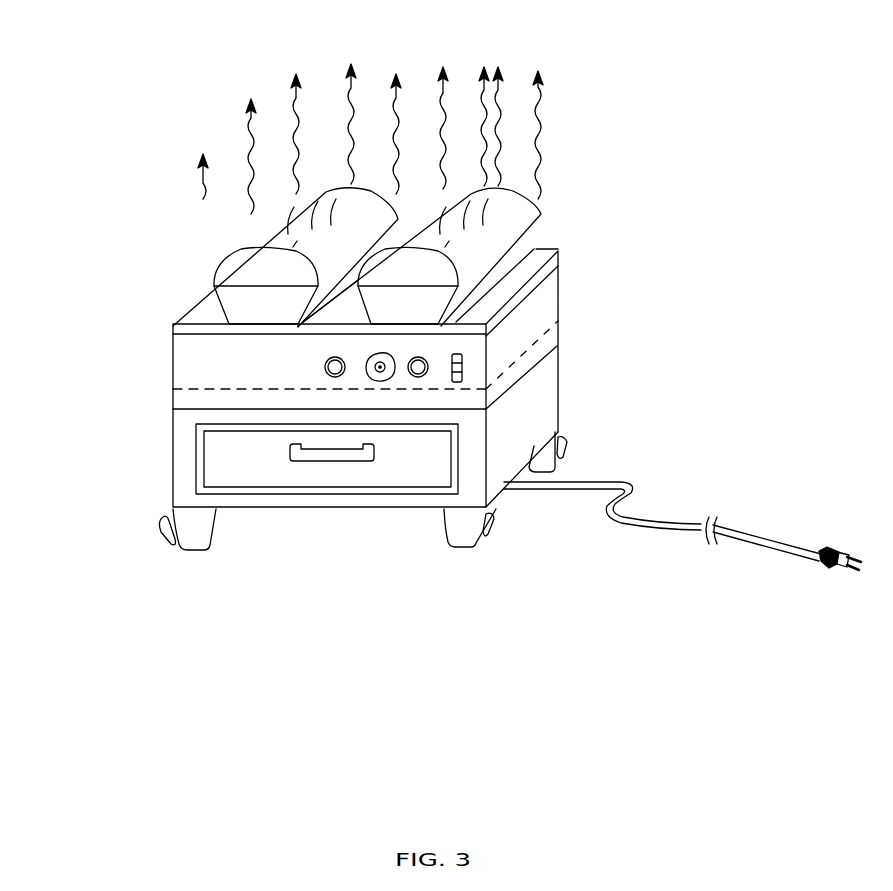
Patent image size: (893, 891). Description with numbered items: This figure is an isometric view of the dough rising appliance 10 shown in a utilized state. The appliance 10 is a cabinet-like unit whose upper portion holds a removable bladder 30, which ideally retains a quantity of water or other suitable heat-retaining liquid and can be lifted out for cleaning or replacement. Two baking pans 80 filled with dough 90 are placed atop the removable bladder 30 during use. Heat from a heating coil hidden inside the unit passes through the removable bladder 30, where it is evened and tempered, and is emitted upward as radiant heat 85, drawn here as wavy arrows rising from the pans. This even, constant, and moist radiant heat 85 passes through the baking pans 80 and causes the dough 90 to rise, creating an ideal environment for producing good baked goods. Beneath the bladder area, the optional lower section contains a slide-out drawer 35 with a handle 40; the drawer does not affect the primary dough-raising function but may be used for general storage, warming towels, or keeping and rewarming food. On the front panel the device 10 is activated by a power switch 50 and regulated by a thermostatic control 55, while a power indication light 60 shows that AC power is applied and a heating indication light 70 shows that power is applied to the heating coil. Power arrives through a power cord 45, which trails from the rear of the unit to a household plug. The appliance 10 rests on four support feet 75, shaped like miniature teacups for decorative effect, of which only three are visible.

The dough rising appliance 10 is at (449, 366).
The removable bladder 30 is at (317, 327).
The slide-out drawer 35 is at (408, 473).
The handle 40 is at (340, 463).
The power cord 45 is at (643, 527).
The power switch 50 is at (461, 358).
The thermostatic control 55 is at (390, 373).
The power indication light 60 is at (428, 368).
The heating indication light 70 is at (334, 378).
The support feet 75 is at (182, 555).
The baking pans 80 is at (170, 324).
The radiant heat 85 is at (285, 137).
The dough 90 is at (220, 255).